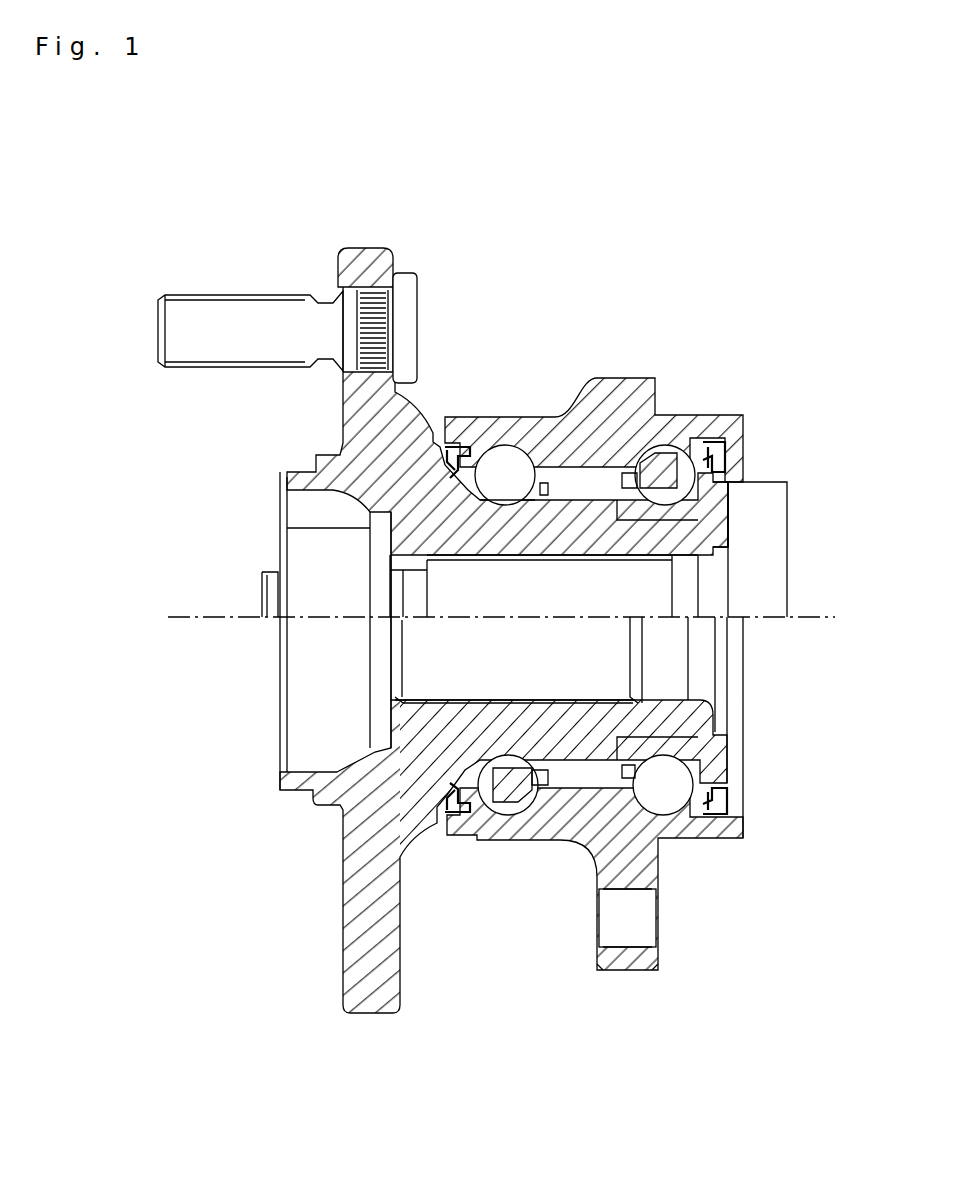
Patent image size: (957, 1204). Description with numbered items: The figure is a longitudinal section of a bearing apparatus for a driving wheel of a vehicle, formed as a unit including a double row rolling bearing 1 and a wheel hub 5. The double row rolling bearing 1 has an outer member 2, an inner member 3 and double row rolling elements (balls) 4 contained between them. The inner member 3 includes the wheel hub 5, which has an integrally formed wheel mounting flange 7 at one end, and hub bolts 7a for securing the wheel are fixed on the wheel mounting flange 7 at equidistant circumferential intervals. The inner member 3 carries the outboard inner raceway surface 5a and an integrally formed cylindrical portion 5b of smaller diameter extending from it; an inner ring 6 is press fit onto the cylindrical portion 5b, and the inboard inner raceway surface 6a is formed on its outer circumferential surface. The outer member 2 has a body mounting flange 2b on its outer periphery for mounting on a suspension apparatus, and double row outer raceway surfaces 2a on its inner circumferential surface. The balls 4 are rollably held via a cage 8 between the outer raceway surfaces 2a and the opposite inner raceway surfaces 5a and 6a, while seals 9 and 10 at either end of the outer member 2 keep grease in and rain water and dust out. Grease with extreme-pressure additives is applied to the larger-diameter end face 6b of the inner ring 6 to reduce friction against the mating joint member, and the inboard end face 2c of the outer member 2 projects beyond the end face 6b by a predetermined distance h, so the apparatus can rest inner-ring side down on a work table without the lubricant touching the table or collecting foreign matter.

The double row rolling bearing 1 is at (629, 332).
The outer member 2 is at (570, 417).
The double row outer raceway surfaces 2a is at (500, 455).
The body mounting flange 2b is at (630, 970).
The end face of the inboard side of the outer member 2c is at (745, 838).
The inner member 3 is at (383, 715).
The double row rolling elements (balls) 4 is at (650, 797).
The wheel hub 5 is at (500, 505).
The inner raceway surface (outboard side raceway surface) 5a is at (498, 487).
The cylindrical portion 5b is at (717, 550).
The inner ring 6 is at (700, 492).
The inner raceway surface (inboard side raceway surface) 6a is at (752, 483).
The end face of a larger diameter of the inner ring 6b is at (730, 766).
The wheel mounting flange 7 is at (370, 258).
The hub bolts 7a is at (197, 312).
The cage 8 is at (628, 480).
The seal 9 is at (442, 457).
The seal 10 is at (722, 447).
The predetermined distance h is at (692, 668).